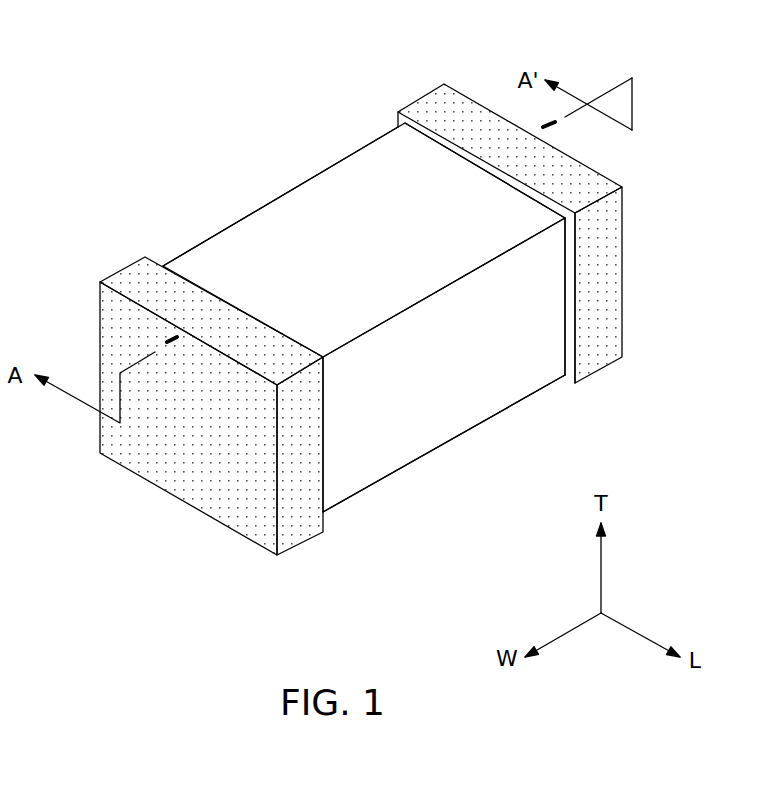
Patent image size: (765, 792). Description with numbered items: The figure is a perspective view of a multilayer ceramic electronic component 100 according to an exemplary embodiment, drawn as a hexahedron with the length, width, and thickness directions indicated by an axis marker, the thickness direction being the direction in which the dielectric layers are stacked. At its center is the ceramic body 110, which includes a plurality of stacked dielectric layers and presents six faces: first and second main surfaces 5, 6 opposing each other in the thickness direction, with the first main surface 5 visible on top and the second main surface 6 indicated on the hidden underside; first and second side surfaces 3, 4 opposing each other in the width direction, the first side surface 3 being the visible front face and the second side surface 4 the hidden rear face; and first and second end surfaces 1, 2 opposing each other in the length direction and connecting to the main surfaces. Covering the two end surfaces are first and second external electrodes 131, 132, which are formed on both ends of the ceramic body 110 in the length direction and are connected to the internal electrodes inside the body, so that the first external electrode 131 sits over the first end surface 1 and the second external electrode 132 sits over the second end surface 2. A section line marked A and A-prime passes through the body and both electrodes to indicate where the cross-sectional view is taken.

The multilayer ceramic electronic component 100 is at (77, 50).
The ceramic body 110 is at (313, 205).
The first end surface 1 is at (180, 438).
The second end surface 2 is at (592, 275).
The first side surface 3 is at (447, 370).
The second side surface 4 is at (298, 263).
The first main surface 5 is at (355, 235).
The second main surface 6 is at (390, 400).
The first external electrode 131 is at (133, 277).
The second external electrode 132 is at (432, 105).